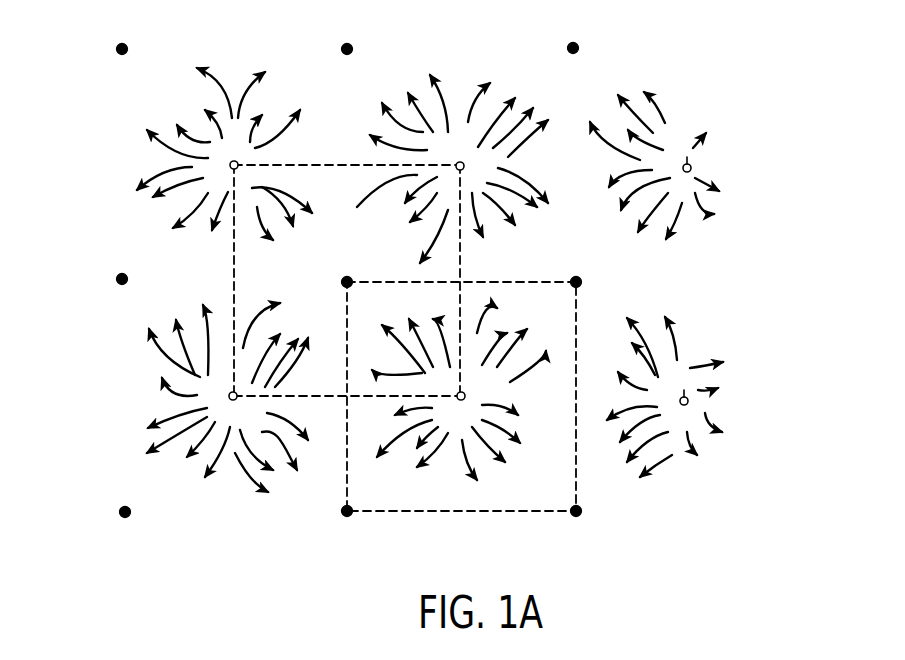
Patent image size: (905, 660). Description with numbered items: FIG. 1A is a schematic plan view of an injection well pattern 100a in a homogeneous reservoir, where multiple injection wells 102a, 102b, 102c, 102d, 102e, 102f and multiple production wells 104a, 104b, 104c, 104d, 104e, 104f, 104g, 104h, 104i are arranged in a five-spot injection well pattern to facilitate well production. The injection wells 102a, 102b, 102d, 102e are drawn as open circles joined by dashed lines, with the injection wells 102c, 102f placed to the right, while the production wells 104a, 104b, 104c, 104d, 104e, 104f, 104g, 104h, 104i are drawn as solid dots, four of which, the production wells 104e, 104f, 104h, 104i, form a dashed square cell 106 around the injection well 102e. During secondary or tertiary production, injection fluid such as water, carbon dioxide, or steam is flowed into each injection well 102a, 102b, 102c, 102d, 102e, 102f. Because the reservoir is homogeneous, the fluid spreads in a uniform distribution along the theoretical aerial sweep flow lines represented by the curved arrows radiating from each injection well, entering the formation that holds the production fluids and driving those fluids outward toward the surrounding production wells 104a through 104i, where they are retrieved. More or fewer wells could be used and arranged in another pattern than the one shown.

The flow field arrangement 100a is at (100, 157).
The injection well 102a is at (240, 163).
The injection well 102b is at (460, 161).
The injection well 102c is at (692, 168).
The injection well 102d is at (234, 400).
The injection well 102e is at (461, 400).
The injection well 102f is at (690, 401).
The production well 104a is at (122, 49).
The production well 104b is at (347, 49).
The production well 104c is at (573, 48).
The production well 104d is at (122, 275).
The production well 104e is at (347, 278).
The production well 104f is at (576, 282).
The production well 104g is at (125, 506).
The production well 104h is at (343, 511).
The production well 104i is at (578, 515).
The grid cell boundary 106 is at (486, 514).